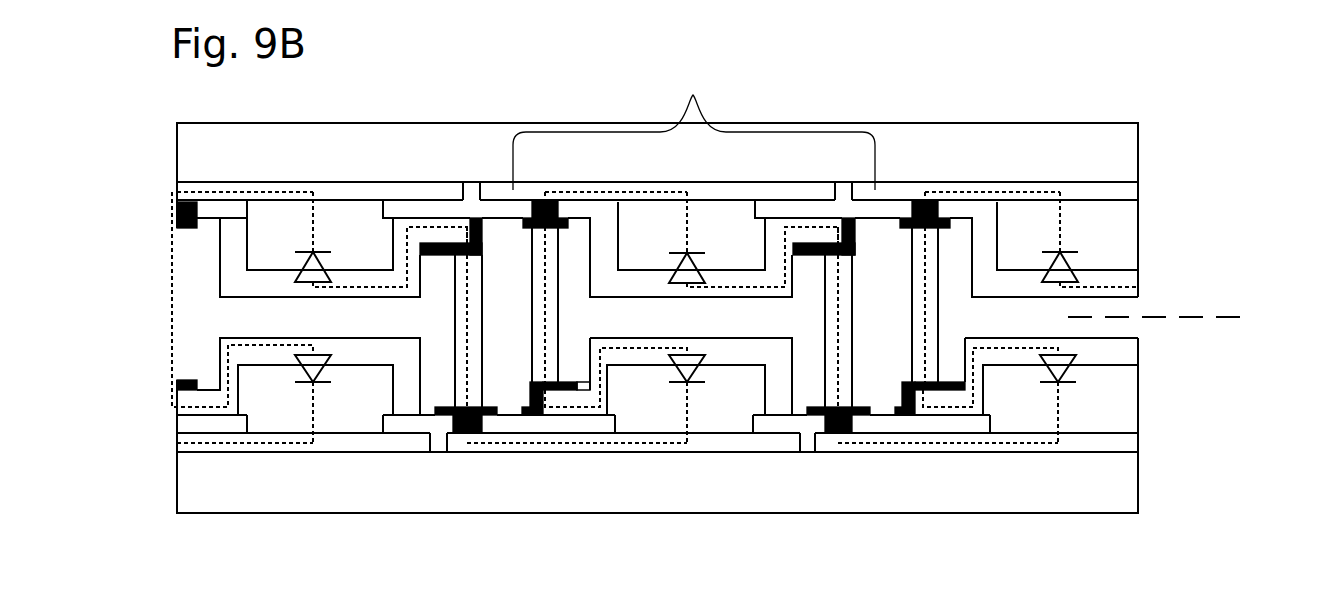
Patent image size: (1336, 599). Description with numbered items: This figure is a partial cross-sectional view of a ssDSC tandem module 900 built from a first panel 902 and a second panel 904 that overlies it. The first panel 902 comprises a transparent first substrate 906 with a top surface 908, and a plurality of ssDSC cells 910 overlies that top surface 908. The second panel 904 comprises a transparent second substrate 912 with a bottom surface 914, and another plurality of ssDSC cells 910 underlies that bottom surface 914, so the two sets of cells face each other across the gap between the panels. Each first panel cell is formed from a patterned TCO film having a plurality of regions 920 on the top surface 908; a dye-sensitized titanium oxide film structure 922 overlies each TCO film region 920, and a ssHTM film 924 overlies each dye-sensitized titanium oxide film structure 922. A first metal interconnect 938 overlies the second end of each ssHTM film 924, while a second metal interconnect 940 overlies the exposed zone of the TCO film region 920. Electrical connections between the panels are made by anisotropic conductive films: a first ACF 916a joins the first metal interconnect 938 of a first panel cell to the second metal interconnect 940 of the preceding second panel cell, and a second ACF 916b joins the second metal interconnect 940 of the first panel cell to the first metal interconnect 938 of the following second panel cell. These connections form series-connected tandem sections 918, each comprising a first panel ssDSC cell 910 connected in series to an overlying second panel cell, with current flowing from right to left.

The ssDSC tandem module 900 is at (1037, 100).
The first panel 902 is at (1198, 349).
The second panel 904 is at (1198, 283).
The first substrate 906 is at (676, 494).
The top surface 908 is at (204, 457).
The ssDSC cell 910 is at (1144, 372).
The second substrate 912 is at (412, 164).
The bottom surface 914 is at (203, 180).
The first ACF 916a is at (560, 328).
The second ACF 916b is at (454, 336).
The tandem section 918 is at (694, 108).
The TCO film region 920 is at (349, 453).
The dye-sensitized titanium oxide film structure 922 is at (298, 409).
The ssHTM film 924 is at (349, 337).
The first metal interconnect 938 is at (482, 242).
The second metal interconnect 940 is at (567, 230).